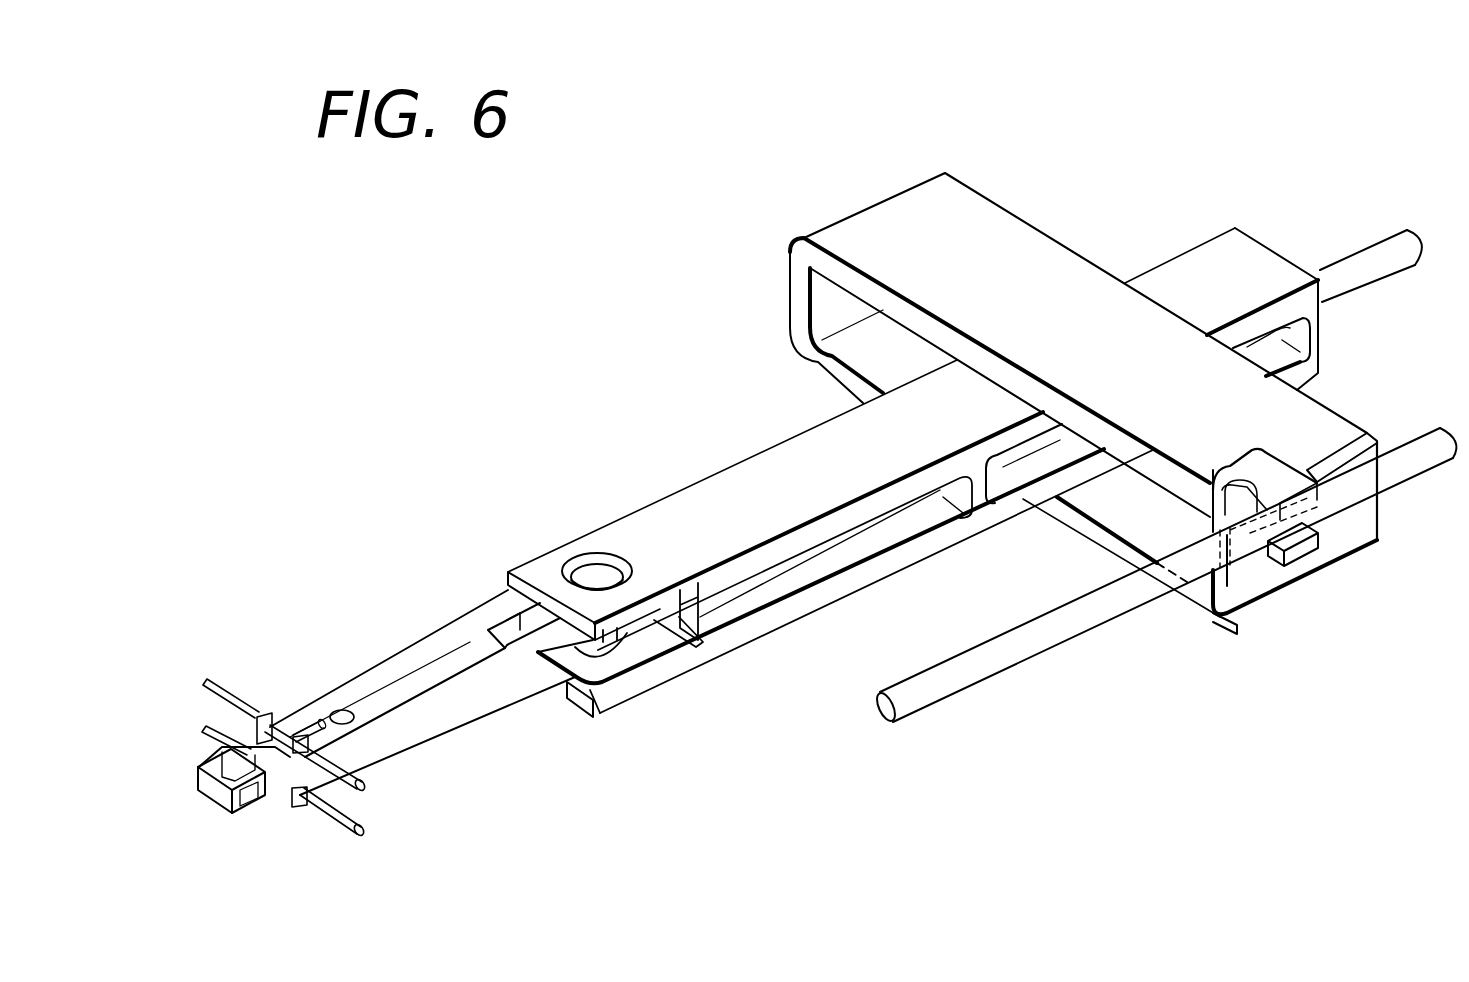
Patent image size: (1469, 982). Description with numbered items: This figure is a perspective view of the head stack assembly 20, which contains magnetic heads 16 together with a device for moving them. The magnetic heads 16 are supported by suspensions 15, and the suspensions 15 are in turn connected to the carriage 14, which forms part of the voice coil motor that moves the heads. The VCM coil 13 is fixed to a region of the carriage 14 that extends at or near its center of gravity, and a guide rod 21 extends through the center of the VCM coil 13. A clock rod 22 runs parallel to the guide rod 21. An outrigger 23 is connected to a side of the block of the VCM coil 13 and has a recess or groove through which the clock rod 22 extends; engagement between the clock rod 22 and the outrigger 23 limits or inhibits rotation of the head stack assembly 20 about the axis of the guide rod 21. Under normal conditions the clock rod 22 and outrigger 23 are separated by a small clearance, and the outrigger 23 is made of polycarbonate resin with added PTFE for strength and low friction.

The VCM coil 13 is at (1033, 237).
The carriage 14 is at (744, 478).
The suspensions 15 is at (433, 661).
The magnetic heads 16 is at (198, 778).
The head stack assembly 20 is at (487, 428).
The guide rod 21 is at (1363, 272).
The clock rod 22 is at (1042, 633).
The outrigger 23 is at (1293, 547).